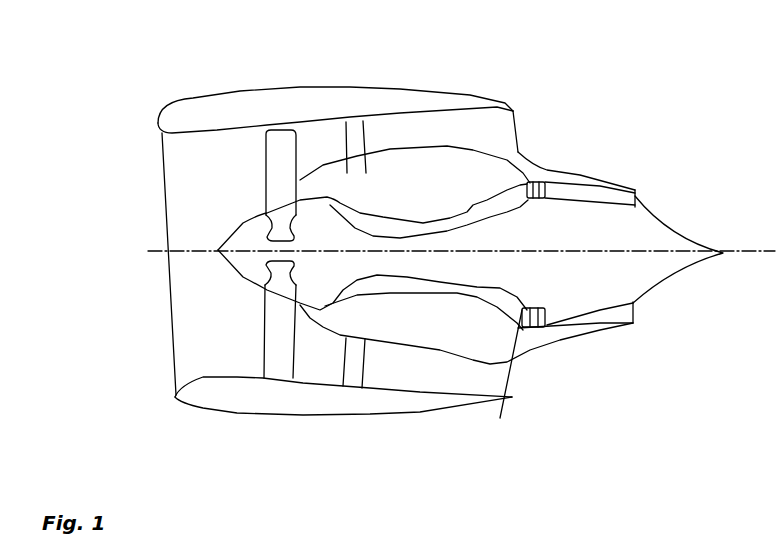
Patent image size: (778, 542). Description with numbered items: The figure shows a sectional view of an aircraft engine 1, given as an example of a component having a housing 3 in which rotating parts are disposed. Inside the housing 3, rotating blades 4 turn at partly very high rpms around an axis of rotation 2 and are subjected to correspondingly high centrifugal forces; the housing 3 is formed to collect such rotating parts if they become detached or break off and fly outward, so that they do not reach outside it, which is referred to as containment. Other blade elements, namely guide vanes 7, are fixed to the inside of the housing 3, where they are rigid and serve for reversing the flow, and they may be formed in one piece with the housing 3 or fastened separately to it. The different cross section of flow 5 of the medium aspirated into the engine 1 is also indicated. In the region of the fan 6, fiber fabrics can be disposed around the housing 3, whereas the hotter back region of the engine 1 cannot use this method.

The aircraft engine 1 is at (148, 92).
The axis of rotation 2 is at (190, 248).
The housing 3 is at (527, 183).
The rotating blades 4 is at (285, 168).
The cross section of flow 5 is at (300, 221).
The fan 6 is at (317, 417).
The guide vanes 7 is at (507, 378).